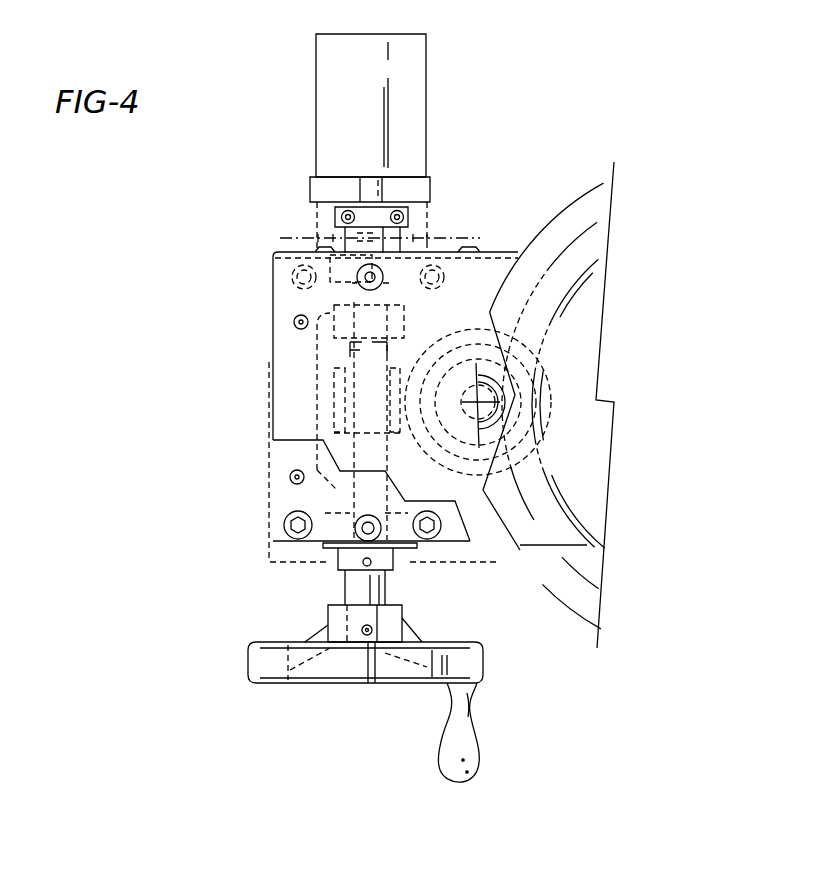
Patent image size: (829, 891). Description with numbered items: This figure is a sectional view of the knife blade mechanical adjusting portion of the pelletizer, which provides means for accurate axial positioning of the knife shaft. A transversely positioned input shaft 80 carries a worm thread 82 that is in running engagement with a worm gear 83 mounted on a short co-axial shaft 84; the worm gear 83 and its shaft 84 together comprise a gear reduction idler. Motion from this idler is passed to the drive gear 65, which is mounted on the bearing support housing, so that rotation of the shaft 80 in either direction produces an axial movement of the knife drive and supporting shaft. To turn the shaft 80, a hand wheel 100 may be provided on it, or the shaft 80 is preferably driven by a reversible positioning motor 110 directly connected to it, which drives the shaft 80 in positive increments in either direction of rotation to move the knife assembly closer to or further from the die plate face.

The reversible positioning motor 110 is at (410, 110).
The worm gear 83 is at (528, 240).
The worm thread 82 is at (332, 398).
The short co-axial shaft 84 is at (510, 397).
The drive gear 65 is at (557, 328).
The shaft 80 is at (385, 588).
The hand wheel 100 is at (393, 683).